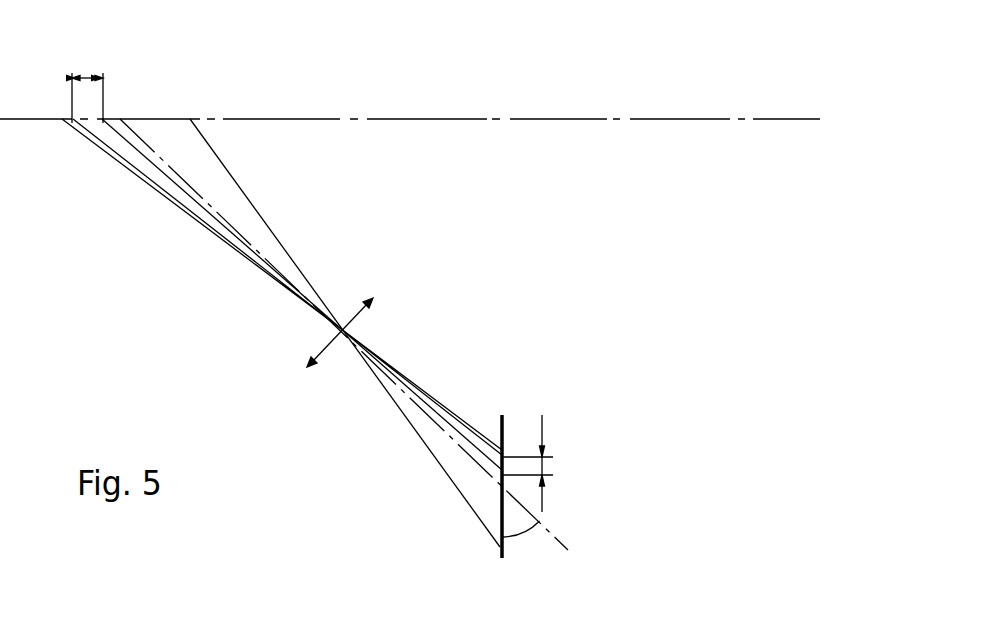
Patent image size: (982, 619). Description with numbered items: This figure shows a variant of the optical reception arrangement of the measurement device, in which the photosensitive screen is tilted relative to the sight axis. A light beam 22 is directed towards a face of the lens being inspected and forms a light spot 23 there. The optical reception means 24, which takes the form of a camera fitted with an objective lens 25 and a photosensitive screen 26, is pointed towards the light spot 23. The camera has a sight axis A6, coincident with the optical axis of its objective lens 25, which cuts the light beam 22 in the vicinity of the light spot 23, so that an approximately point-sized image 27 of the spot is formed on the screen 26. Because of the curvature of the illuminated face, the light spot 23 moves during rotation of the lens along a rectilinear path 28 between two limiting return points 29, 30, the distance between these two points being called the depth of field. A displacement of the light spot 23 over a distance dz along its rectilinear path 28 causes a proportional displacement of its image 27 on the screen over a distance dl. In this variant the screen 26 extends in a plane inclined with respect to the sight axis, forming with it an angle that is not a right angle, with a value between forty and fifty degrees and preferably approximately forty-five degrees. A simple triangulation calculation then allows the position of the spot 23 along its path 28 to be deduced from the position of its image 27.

The light beam 22 is at (556, 118).
The light spot 23 is at (100, 127).
The optical reception means 24 is at (447, 338).
The objective lens 25 is at (338, 340).
The photosensitive screen 26 is at (500, 413).
The image 27 is at (497, 472).
The rectilinear path 28 is at (154, 102).
The limiting return point 29 is at (190, 121).
The limiting return point 30 is at (62, 118).
The sight axis A6 is at (223, 212).
The displacement distance of the light spot dz is at (90, 78).
The displacement distance of the image dl is at (543, 422).